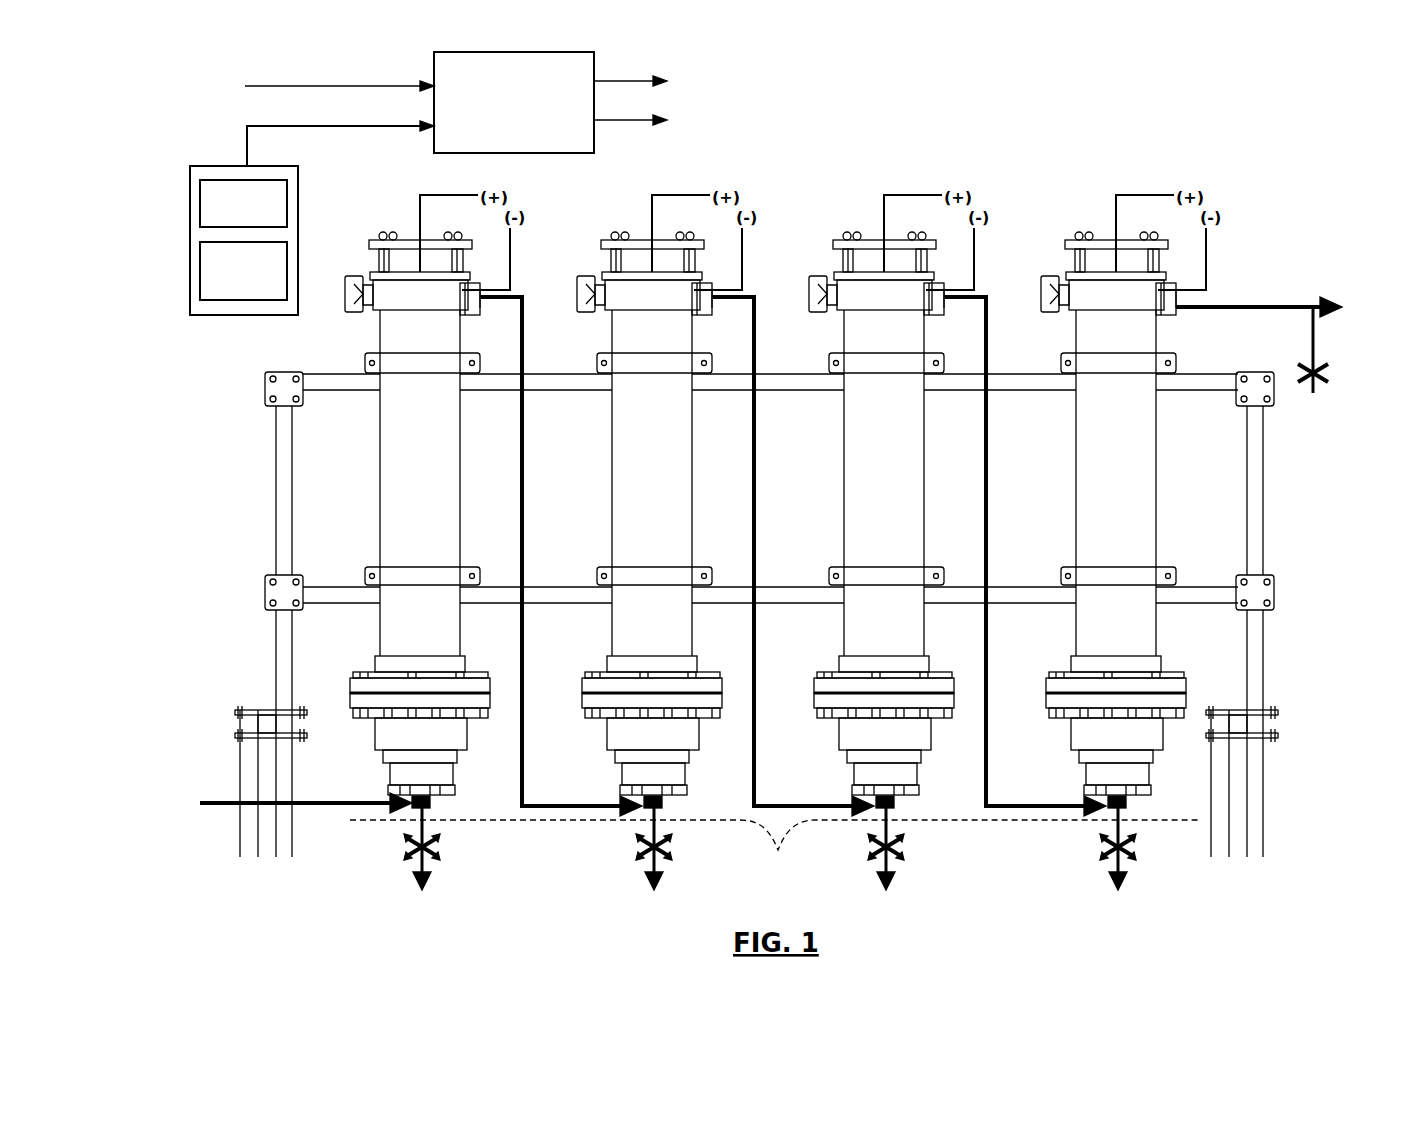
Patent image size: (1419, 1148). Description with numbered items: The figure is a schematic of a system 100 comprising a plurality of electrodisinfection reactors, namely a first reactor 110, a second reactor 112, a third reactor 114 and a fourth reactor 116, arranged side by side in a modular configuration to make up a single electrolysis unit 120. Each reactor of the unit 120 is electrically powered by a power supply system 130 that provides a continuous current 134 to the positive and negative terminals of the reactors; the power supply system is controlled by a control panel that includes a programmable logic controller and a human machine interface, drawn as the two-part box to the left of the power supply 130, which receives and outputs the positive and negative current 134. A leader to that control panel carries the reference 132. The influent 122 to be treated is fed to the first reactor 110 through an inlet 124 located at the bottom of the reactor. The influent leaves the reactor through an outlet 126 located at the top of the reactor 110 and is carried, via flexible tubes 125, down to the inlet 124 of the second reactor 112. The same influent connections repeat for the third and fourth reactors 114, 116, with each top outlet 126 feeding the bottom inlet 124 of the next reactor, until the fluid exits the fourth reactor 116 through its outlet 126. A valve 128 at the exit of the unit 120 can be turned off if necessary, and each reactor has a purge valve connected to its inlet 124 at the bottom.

The system 100 is at (1032, 86).
The first reactor 110 is at (417, 513).
The second reactor 112 is at (649, 513).
The third reactor 114 is at (881, 513).
The fourth reactor 116 is at (1113, 513).
The electrolysis unit 120 is at (775, 854).
The influent 122 is at (217, 828).
The inlet 124 is at (645, 814).
The flexible tubes 125 is at (524, 452).
The outlet 126 is at (483, 310).
The valve 128 is at (1330, 405).
The power supply system 130 is at (472, 109).
The controller with PLC and HMI 132 is at (176, 224).
The continuous current 134 is at (742, 90).